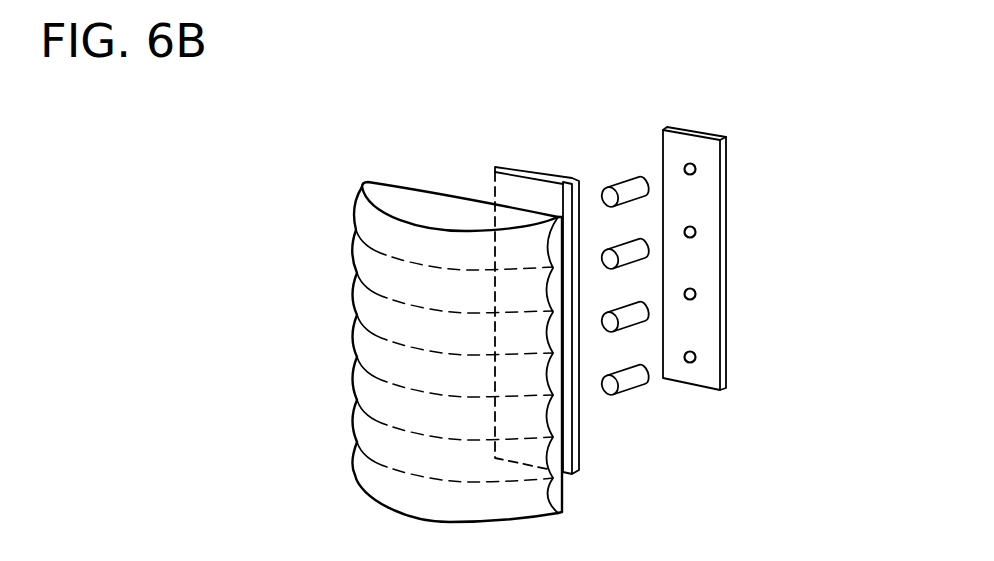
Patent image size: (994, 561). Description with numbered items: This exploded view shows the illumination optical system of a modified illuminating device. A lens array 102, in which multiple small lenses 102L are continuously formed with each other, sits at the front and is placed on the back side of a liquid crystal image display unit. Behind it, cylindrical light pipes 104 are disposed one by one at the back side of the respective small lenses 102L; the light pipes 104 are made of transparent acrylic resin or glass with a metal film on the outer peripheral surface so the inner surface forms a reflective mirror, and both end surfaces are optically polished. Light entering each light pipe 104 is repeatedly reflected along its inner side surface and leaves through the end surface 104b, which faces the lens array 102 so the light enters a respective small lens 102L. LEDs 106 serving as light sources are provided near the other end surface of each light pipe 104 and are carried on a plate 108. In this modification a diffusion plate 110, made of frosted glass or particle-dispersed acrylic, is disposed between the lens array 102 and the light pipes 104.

The lens array 102 is at (228, 175).
The small lens 102L is at (352, 210).
The light pipe 104 is at (617, 251).
The end surface 104b is at (608, 262).
The LED 106 is at (697, 169).
The plate 108 is at (707, 133).
The diffusion plate 110 is at (538, 170).